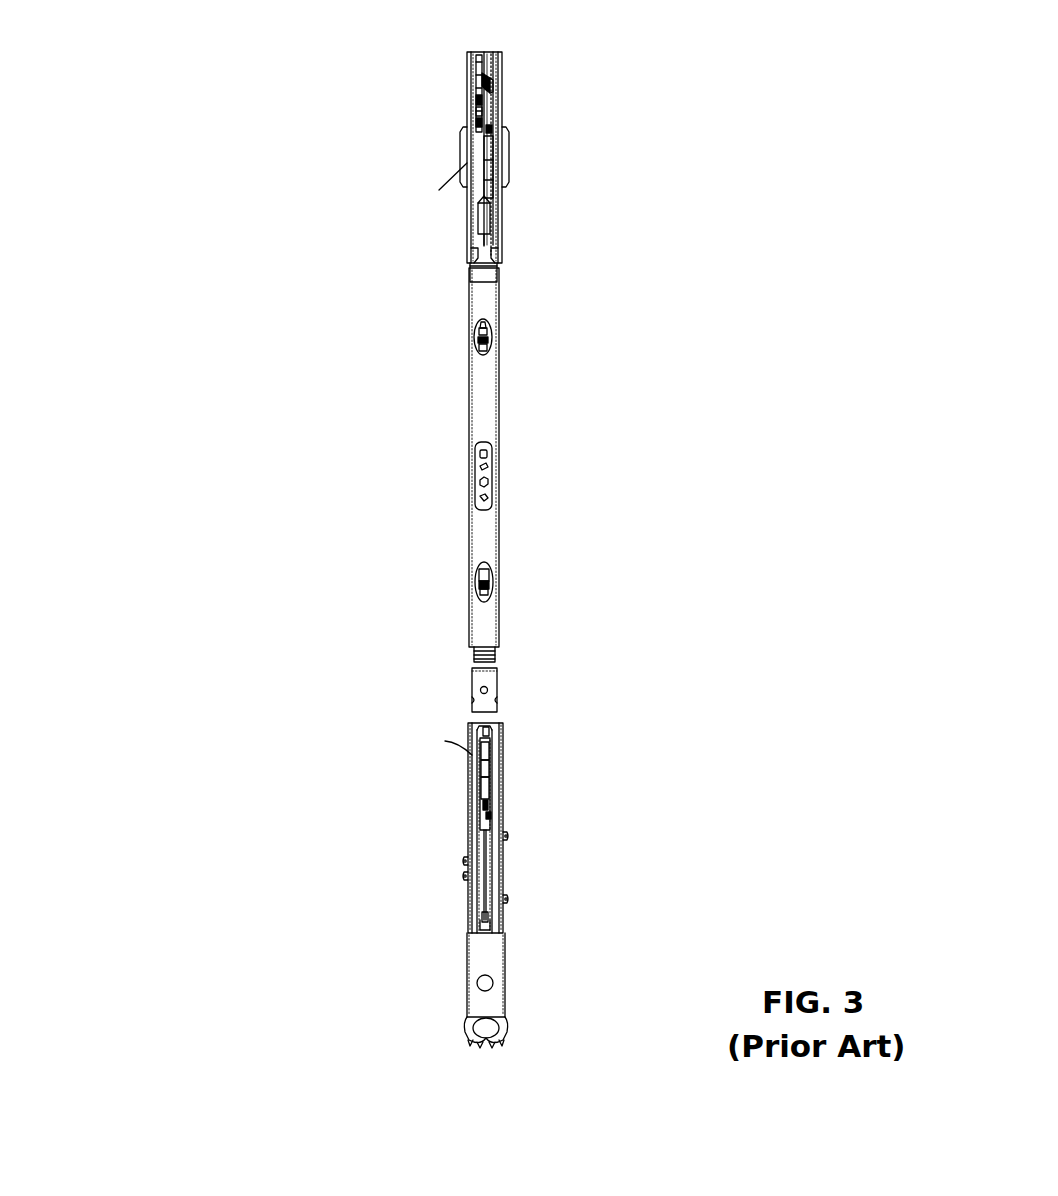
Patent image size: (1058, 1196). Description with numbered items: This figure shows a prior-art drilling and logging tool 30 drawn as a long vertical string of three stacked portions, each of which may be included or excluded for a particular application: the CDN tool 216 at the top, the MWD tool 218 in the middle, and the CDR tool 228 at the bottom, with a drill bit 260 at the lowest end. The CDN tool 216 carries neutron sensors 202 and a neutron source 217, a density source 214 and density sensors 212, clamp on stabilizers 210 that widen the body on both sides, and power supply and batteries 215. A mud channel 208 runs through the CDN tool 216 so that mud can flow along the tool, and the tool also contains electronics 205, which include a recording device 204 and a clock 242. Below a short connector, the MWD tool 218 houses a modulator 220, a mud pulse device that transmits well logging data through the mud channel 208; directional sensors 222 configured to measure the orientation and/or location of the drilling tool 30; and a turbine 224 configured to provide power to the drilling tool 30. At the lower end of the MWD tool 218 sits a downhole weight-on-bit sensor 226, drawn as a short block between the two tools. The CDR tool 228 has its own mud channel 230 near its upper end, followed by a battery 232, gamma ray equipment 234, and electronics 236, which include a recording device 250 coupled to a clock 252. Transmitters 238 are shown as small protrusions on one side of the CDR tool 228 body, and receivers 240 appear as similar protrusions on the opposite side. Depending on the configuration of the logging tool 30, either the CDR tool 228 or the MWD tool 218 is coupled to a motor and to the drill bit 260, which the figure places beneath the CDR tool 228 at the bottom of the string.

The logging tool 30 is at (115, 79).
The neutron sensors 202 is at (470, 70).
The recording device 204 is at (478, 110).
The electronics 205 is at (478, 100).
The mud channel 208 is at (487, 52).
The clamp on stabilizers 210 is at (509, 149).
The density sensors 212 is at (488, 183).
The density source 214 is at (494, 128).
The power supply and batteries 215 is at (483, 227).
The CDN tool 216 is at (163, 257).
The neutron source 217 is at (490, 86).
The MWD tool 218 is at (158, 667).
The modulator 220 is at (493, 337).
The directional sensors 222 is at (495, 478).
The turbine 224 is at (495, 581).
The downhole weight-on-bit sensor 226 is at (497, 690).
The CDR tool 228 is at (160, 940).
The mud channel 230 is at (497, 724).
The battery 232 is at (487, 756).
The gamma ray equipment 234 is at (487, 772).
The electronics 236 is at (495, 793).
The transmitters 238 is at (507, 898).
The receivers 240 is at (463, 874).
The clock 242 is at (470, 138).
The recording device 250 is at (493, 806).
The clock 252 is at (495, 817).
The drill bit 260 is at (505, 1025).